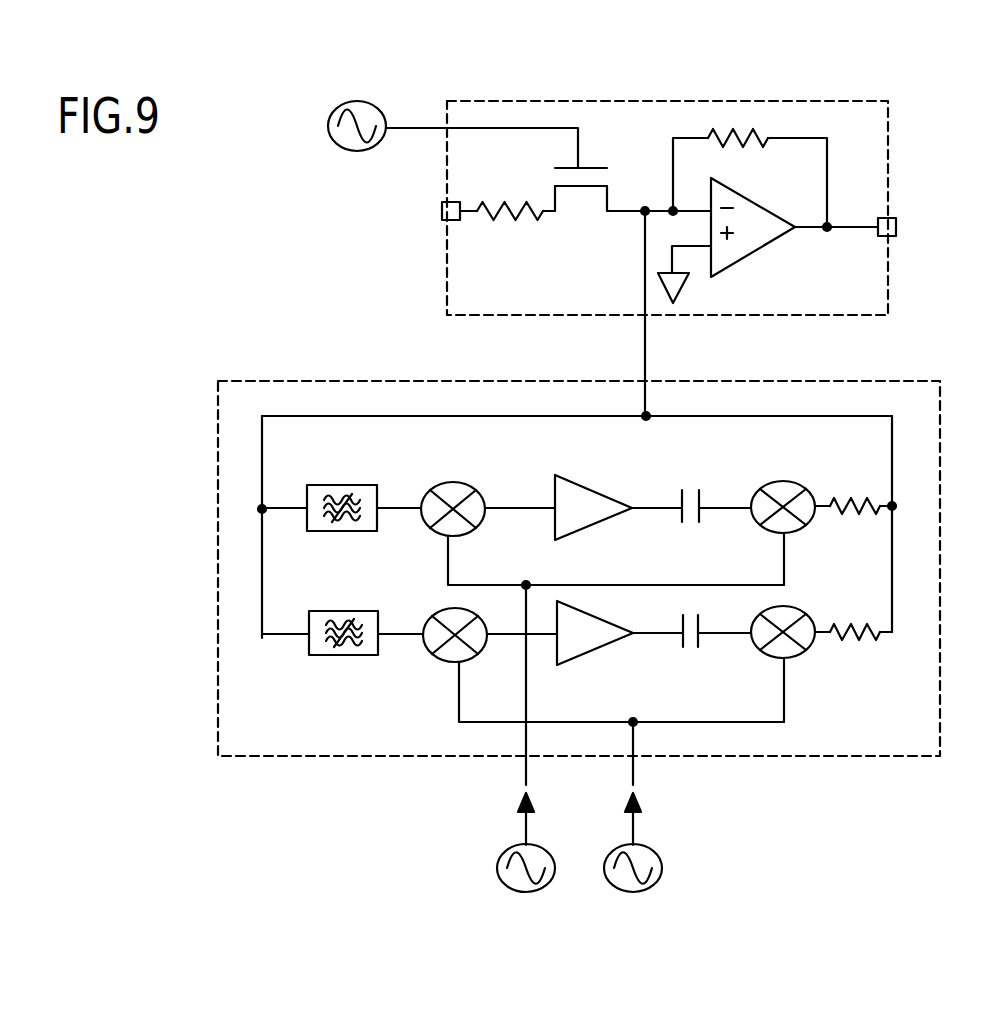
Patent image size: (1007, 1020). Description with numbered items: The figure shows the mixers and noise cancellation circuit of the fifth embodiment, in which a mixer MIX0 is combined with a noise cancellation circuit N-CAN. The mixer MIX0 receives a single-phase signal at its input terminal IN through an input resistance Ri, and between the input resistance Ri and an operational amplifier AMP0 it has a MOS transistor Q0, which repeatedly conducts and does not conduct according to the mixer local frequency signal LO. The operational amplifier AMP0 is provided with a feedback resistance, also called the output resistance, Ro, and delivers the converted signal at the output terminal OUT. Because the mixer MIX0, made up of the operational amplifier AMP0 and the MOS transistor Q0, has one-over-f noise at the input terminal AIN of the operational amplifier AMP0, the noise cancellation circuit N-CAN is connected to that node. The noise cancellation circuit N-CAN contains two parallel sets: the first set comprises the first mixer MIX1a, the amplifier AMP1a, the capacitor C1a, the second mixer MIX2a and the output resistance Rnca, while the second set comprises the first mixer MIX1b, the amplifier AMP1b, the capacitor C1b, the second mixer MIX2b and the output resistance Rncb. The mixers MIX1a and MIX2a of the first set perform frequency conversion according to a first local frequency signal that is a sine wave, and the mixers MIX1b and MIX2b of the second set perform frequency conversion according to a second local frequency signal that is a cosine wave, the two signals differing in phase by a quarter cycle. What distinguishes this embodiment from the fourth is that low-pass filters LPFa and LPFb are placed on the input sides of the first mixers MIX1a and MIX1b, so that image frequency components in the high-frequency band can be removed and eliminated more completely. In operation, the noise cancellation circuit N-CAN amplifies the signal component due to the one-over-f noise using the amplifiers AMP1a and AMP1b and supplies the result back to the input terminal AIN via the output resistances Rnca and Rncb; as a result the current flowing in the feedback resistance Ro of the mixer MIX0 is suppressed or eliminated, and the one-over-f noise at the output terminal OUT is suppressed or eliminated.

The mixer MIX0 is at (667, 188).
The mixer local frequency signal LO is at (423, 134).
The input terminal IN is at (438, 201).
The input resistance Ri is at (516, 194).
The MOS transistor Q0 is at (596, 210).
The input terminal of the operational amplifier AIN is at (665, 293).
The feedback resistance Ro is at (750, 178).
The operational amplifier AMP0 is at (768, 240).
The output terminal OUT is at (929, 220).
The noise cancellation circuit N-CAN is at (579, 553).
The low-pass filter LPFa is at (341, 492).
The first mixer MIX1a is at (590, 511).
The amplifier AMP1a is at (613, 490).
The capacitor C1a is at (710, 524).
The second mixer MIX2a is at (781, 512).
The output resistance Rnca is at (856, 522).
The low-pass filter LPFb is at (342, 617).
The first mixer MIX1b is at (576, 665).
The amplifier AMP1b is at (620, 649).
The capacitor C1b is at (717, 649).
The second mixer MIX2b is at (806, 646).
The output resistance Rncb is at (856, 654).